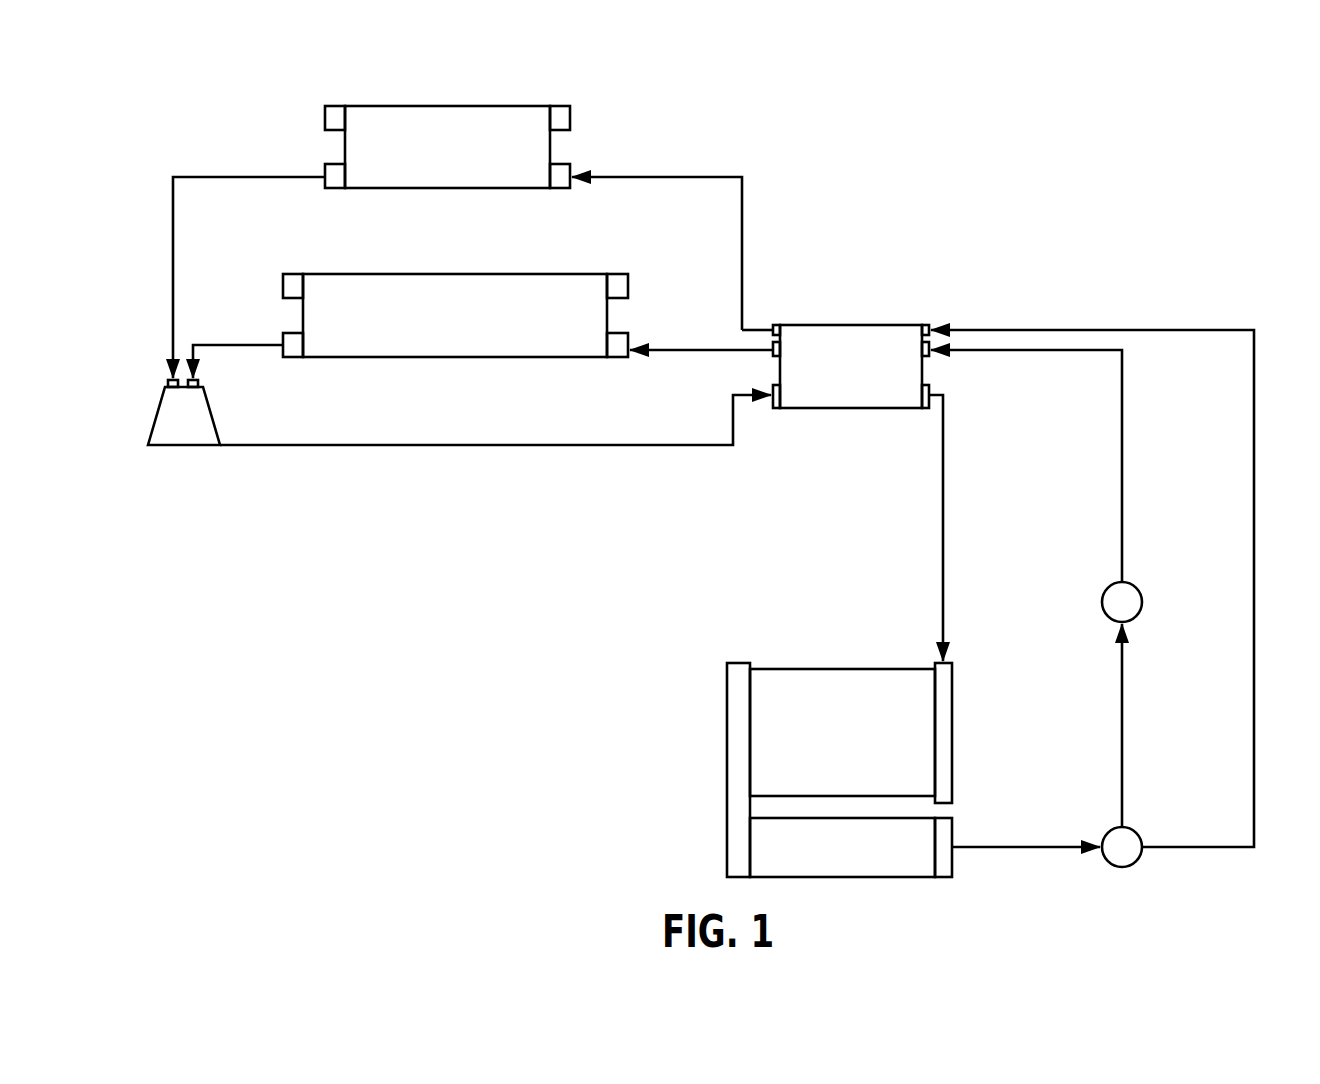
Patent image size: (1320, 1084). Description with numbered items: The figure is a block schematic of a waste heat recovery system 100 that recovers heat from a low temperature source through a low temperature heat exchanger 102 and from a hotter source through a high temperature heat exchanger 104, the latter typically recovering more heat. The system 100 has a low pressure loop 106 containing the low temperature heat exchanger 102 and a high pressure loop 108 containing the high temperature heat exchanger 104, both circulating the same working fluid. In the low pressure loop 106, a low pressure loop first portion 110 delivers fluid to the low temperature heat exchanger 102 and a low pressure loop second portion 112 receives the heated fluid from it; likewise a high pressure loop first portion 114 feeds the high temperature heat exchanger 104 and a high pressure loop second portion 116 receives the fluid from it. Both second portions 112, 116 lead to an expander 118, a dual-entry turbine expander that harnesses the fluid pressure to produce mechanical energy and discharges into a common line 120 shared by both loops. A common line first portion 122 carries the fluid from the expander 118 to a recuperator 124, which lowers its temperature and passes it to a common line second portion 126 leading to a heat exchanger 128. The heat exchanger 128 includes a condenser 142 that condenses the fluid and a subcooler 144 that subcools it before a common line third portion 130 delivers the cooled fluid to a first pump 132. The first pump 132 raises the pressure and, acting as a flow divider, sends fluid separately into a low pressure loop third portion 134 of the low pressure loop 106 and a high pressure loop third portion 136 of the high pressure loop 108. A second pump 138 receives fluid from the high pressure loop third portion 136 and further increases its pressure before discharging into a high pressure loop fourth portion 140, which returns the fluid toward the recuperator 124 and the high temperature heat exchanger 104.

The waste heat recovery system 100 is at (1094, 206).
The low temperature heat exchanger 102 is at (405, 106).
The high temperature heat exchanger 104 is at (549, 273).
The low pressure loop 106 is at (620, 136).
The high pressure loop 108 is at (657, 311).
The low pressure loop first portion 110 is at (694, 176).
The low pressure loop second portion 112 is at (210, 176).
The high pressure loop first portion 114 is at (703, 348).
The high pressure loop second portion 116 is at (237, 344).
The expander 118 is at (182, 447).
The common line 120 is at (649, 479).
The common line first portion 122 is at (495, 446).
The recuperator 124 is at (840, 325).
The common line second portion 126 is at (942, 517).
The heat exchanger 128 is at (769, 758).
The common line third portion 130 is at (1018, 845).
The first pump 132 is at (1124, 868).
The low pressure loop third portion 134 is at (1254, 713).
The high pressure loop third portion 136 is at (1120, 722).
The second pump 138 is at (1110, 600).
The high pressure loop fourth portion 140 is at (1120, 478).
The condenser 142 is at (780, 668).
The subcooler 144 is at (888, 860).